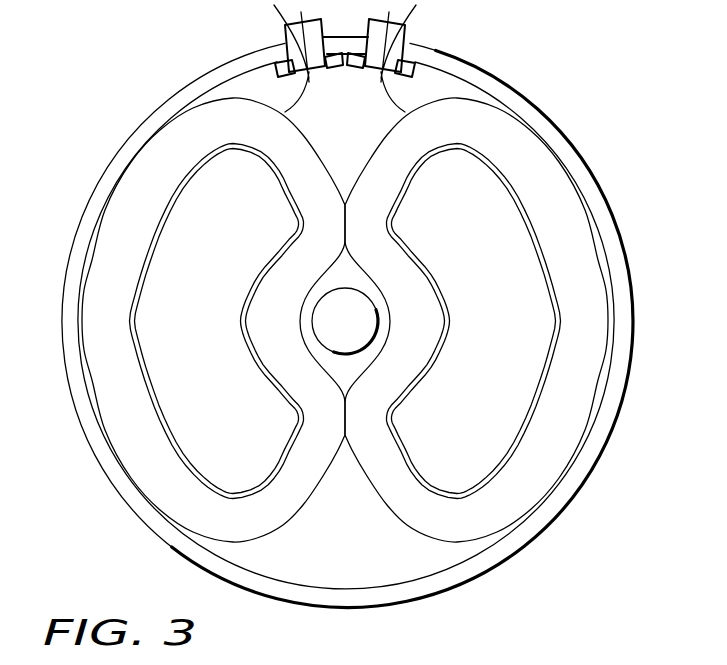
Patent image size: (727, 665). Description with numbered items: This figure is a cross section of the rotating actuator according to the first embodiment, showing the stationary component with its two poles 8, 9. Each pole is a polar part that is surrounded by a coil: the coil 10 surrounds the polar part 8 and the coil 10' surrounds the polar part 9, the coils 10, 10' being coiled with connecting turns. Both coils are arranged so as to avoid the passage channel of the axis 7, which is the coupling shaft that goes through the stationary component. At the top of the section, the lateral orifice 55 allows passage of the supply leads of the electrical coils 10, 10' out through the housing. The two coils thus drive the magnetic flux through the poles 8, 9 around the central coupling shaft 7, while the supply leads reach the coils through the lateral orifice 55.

The coupling shaft 7 is at (355, 336).
The pole 8 is at (215, 255).
The pole 9 is at (475, 446).
The coil 10 is at (327, 325).
The coil 10' is at (425, 329).
The lateral orifice 55 is at (286, 37).